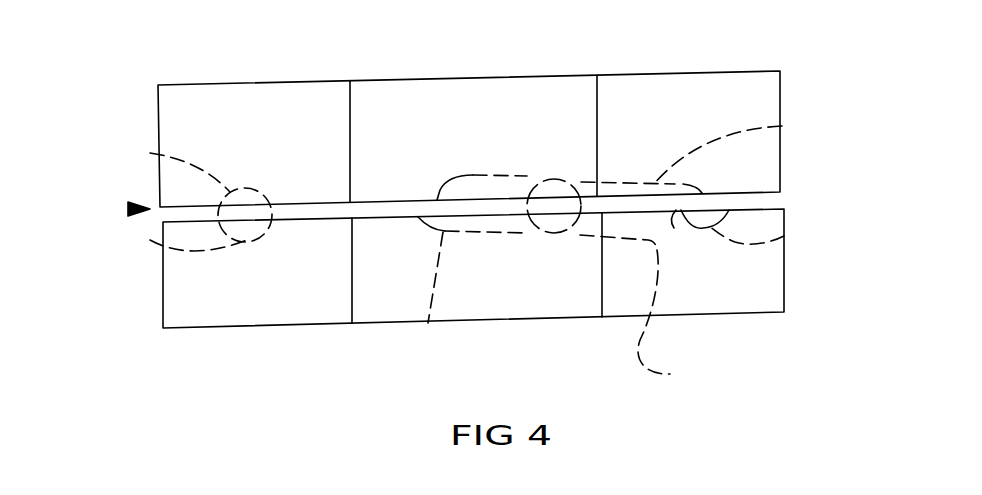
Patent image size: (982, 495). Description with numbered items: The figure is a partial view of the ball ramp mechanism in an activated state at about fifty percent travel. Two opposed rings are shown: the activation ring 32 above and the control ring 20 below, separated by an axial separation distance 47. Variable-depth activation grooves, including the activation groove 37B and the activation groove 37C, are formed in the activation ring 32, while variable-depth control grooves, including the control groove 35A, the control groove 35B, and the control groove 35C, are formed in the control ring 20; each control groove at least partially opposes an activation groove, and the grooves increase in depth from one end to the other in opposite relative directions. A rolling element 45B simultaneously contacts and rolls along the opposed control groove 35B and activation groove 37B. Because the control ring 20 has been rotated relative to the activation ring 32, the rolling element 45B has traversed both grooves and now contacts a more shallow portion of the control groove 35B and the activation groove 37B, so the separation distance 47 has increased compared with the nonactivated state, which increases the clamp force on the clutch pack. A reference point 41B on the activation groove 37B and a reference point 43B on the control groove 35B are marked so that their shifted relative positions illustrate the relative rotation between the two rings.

The activation ring 32 is at (177, 118).
The control ring 20 is at (176, 271).
The activation groove 37C is at (150, 153).
The control groove 35C is at (150, 240).
The axial separation distance 47 is at (130, 209).
The reference point 41B is at (463, 175).
The rolling element 45B is at (583, 210).
The activation groove 37B is at (782, 126).
The control groove 35B is at (426, 328).
The reference point 43B is at (684, 322).
The control groove 35A is at (784, 236).